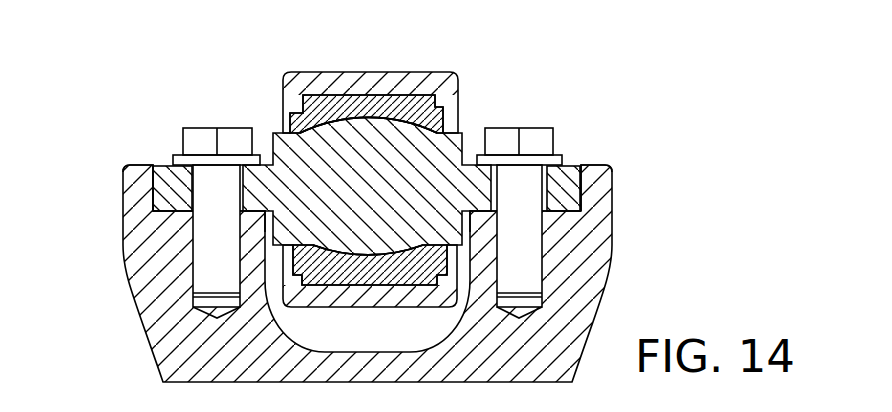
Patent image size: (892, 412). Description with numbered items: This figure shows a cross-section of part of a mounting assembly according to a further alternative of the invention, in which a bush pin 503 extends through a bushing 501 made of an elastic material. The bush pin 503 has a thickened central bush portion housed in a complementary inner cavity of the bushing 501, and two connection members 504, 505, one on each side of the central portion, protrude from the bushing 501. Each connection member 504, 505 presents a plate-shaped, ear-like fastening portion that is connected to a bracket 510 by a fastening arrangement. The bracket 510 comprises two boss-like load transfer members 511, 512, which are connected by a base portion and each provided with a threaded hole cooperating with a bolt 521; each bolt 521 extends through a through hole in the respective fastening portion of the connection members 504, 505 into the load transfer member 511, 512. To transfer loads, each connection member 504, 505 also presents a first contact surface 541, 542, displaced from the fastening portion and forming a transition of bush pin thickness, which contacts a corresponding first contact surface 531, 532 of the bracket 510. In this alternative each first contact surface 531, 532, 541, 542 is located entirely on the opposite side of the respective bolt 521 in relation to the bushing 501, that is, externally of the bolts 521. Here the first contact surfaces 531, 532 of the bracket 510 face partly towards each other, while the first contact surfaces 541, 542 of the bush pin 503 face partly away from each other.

The bushing 501 is at (322, 97).
The bush pin 503 is at (382, 192).
The connection member 504 is at (244, 160).
The connection member 505 is at (467, 165).
The bracket 510 is at (168, 321).
The load transfer member 511 is at (605, 182).
The load transfer member 512 is at (137, 180).
The bolt 521 is at (212, 258).
The first contact surface of the bracket 531 is at (576, 167).
The first contact surface of the bracket 532 is at (176, 166).
The first contact surface of the bush pin 541 is at (583, 203).
The first contact surface of the bush pin 542 is at (145, 198).